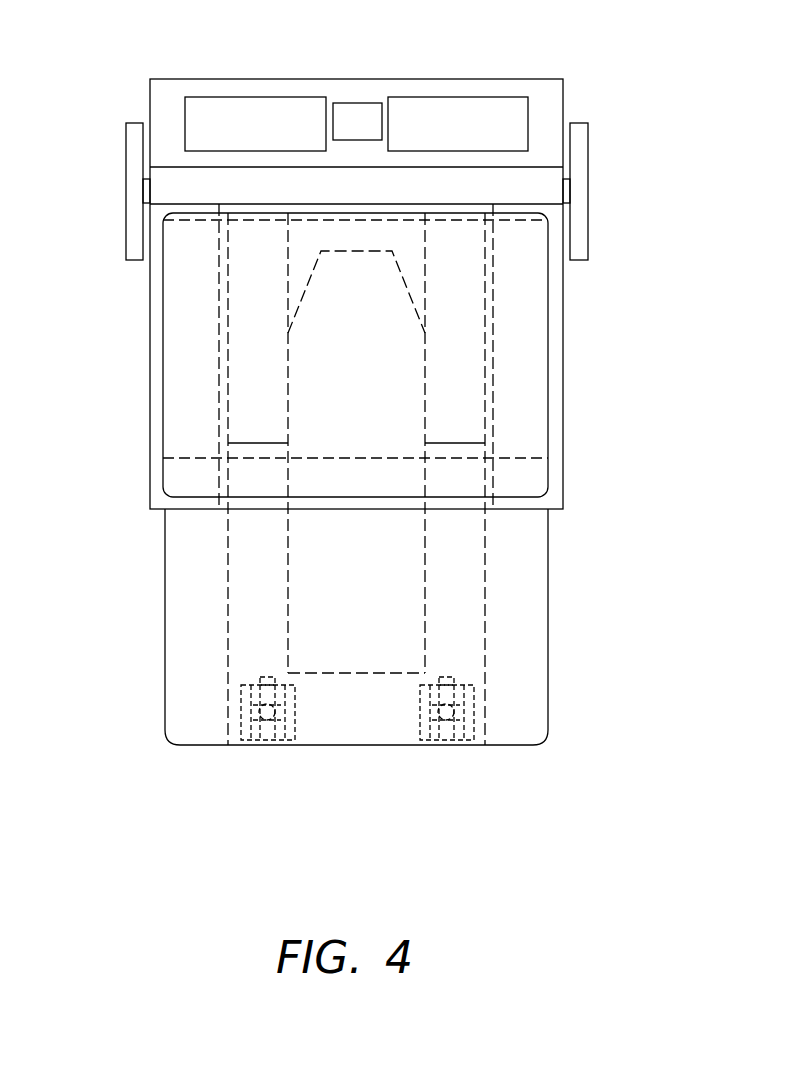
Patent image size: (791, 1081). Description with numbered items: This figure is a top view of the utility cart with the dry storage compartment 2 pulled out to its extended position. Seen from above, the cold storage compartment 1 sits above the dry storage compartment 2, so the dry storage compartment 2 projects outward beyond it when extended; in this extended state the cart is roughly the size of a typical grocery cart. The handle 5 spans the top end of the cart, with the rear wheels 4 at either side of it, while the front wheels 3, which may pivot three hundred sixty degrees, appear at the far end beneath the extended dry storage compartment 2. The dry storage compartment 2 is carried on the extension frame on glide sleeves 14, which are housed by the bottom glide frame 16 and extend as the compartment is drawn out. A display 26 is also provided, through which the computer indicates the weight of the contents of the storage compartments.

The cold storage compartment 1 is at (383, 375).
The dry storage compartment 2 is at (388, 548).
The front wheels 3 is at (267, 742).
The rear wheels 4 is at (129, 143).
The handle 5 is at (540, 92).
The extension frame on glide sleeves 14 is at (258, 582).
The bottom glide frame 16 is at (244, 353).
The display 26 is at (357, 118).